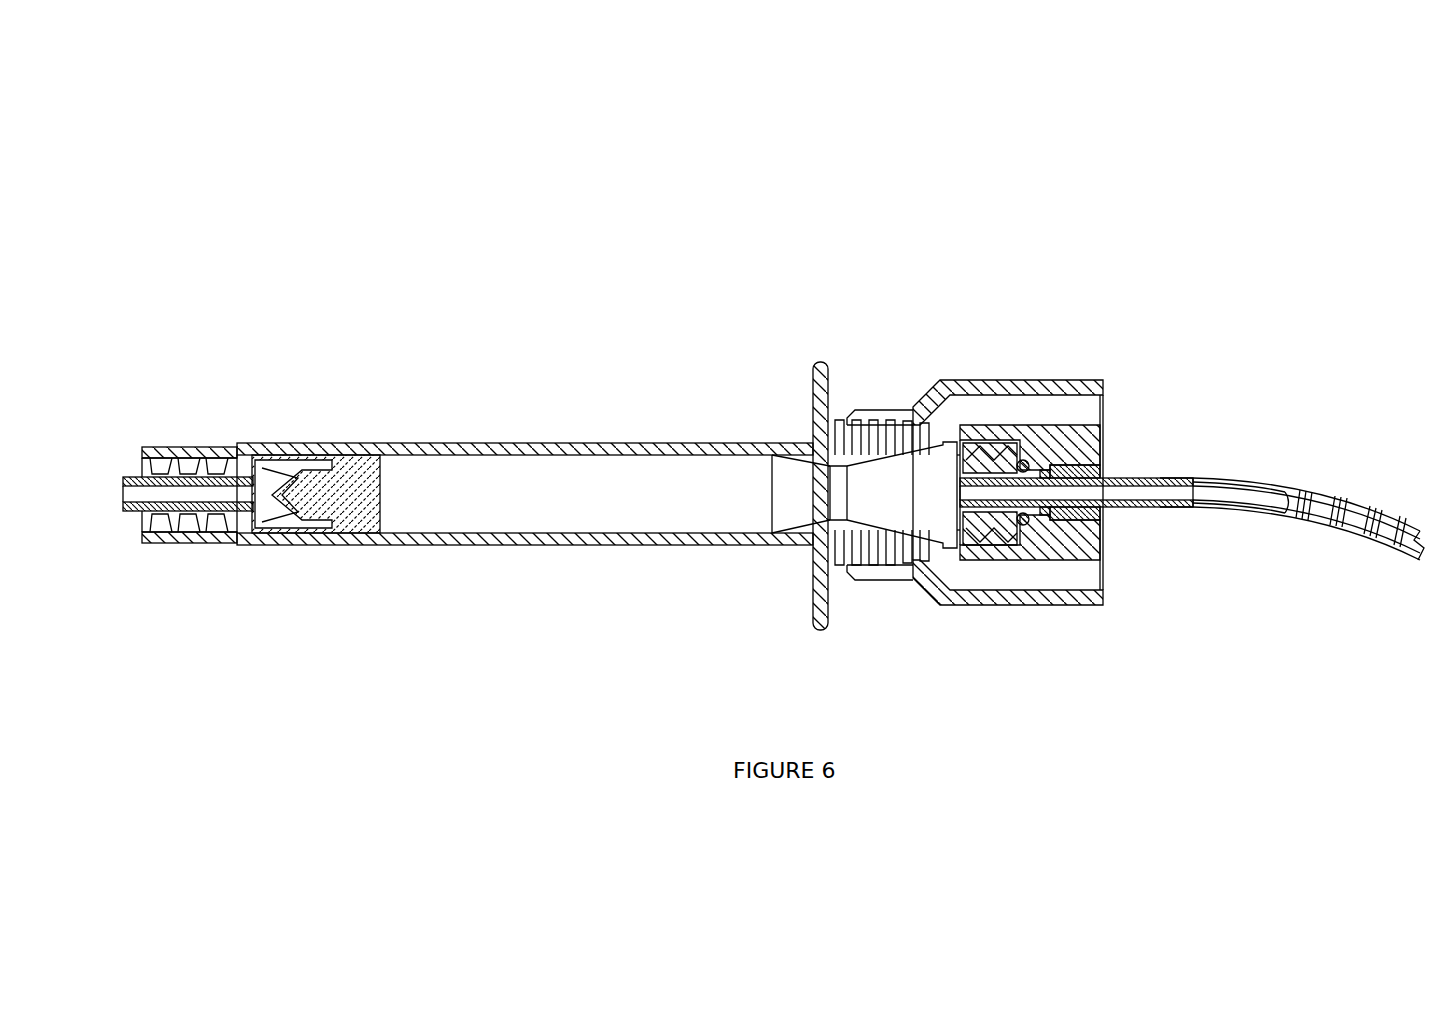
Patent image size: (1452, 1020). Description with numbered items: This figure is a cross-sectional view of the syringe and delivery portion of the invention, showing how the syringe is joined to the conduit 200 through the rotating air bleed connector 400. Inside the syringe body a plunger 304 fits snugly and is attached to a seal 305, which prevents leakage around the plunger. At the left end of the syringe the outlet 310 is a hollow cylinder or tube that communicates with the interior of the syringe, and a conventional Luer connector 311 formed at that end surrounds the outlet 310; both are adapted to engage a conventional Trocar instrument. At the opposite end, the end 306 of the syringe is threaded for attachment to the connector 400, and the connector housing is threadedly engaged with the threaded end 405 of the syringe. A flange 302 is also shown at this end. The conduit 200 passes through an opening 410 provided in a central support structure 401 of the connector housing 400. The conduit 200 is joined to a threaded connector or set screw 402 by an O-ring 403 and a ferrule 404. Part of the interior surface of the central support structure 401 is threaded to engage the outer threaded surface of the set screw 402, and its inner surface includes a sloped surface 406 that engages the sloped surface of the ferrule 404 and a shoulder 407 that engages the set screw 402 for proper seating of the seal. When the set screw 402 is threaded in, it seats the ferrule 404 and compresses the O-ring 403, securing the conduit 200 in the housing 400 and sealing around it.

The rotating air bleed connector 400 is at (1126, 408).
The flange 302 is at (820, 372).
The plunger 304 is at (407, 445).
The seal 305 is at (318, 465).
The end of syringe 306 is at (837, 532).
The outlet 310 is at (130, 509).
The Luer connector 311 is at (158, 462).
The central support structure 401 is at (1087, 468).
The threaded connector (set screw) 402 is at (988, 520).
The O-ring 403 is at (1023, 519).
The ferrule 404 is at (1047, 510).
The threaded end 405 is at (870, 562).
The sloped surface 406 is at (1067, 512).
The shoulder 407 is at (1017, 447).
The opening 410 is at (1101, 508).
The conduit 200 is at (1163, 478).